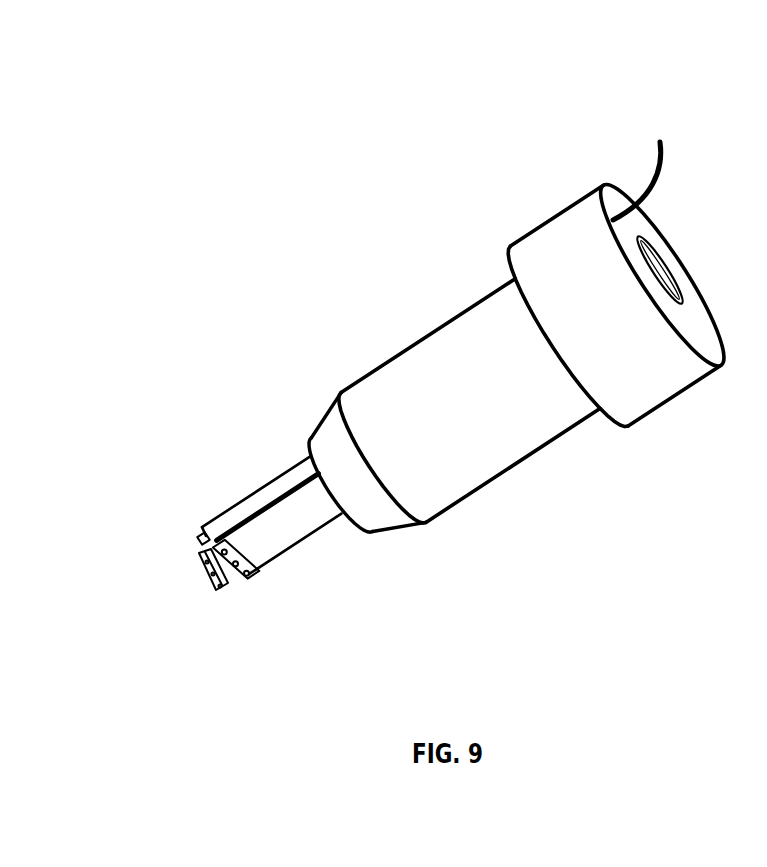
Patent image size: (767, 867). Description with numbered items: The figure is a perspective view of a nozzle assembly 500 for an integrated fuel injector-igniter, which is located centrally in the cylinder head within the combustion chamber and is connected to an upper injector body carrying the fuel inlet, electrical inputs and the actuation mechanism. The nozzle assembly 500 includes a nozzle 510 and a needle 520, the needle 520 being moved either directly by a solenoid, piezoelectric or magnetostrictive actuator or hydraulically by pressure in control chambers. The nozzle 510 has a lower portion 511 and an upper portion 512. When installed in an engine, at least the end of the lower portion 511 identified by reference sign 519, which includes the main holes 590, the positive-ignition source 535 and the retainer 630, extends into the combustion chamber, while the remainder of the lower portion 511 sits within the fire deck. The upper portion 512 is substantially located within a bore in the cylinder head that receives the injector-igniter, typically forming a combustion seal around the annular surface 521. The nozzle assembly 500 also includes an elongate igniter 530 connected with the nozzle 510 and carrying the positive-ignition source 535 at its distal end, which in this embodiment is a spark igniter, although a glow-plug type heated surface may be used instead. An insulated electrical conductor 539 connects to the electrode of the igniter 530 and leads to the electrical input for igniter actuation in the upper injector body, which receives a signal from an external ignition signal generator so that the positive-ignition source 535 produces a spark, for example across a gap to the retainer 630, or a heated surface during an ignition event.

The nozzle assembly 500 is at (274, 204).
The nozzle 510 is at (490, 482).
The lower portion 511 is at (300, 543).
The upper portion 512 is at (545, 353).
The end of lower portion 519 is at (225, 503).
The needle 520 is at (660, 277).
The annular surface 521 is at (392, 522).
The igniter 530 is at (277, 487).
The positive-ignition source 535 is at (200, 540).
The insulated electrical conductor 539 is at (657, 163).
The main holes 590 is at (243, 578).
The retainer 630 is at (230, 588).